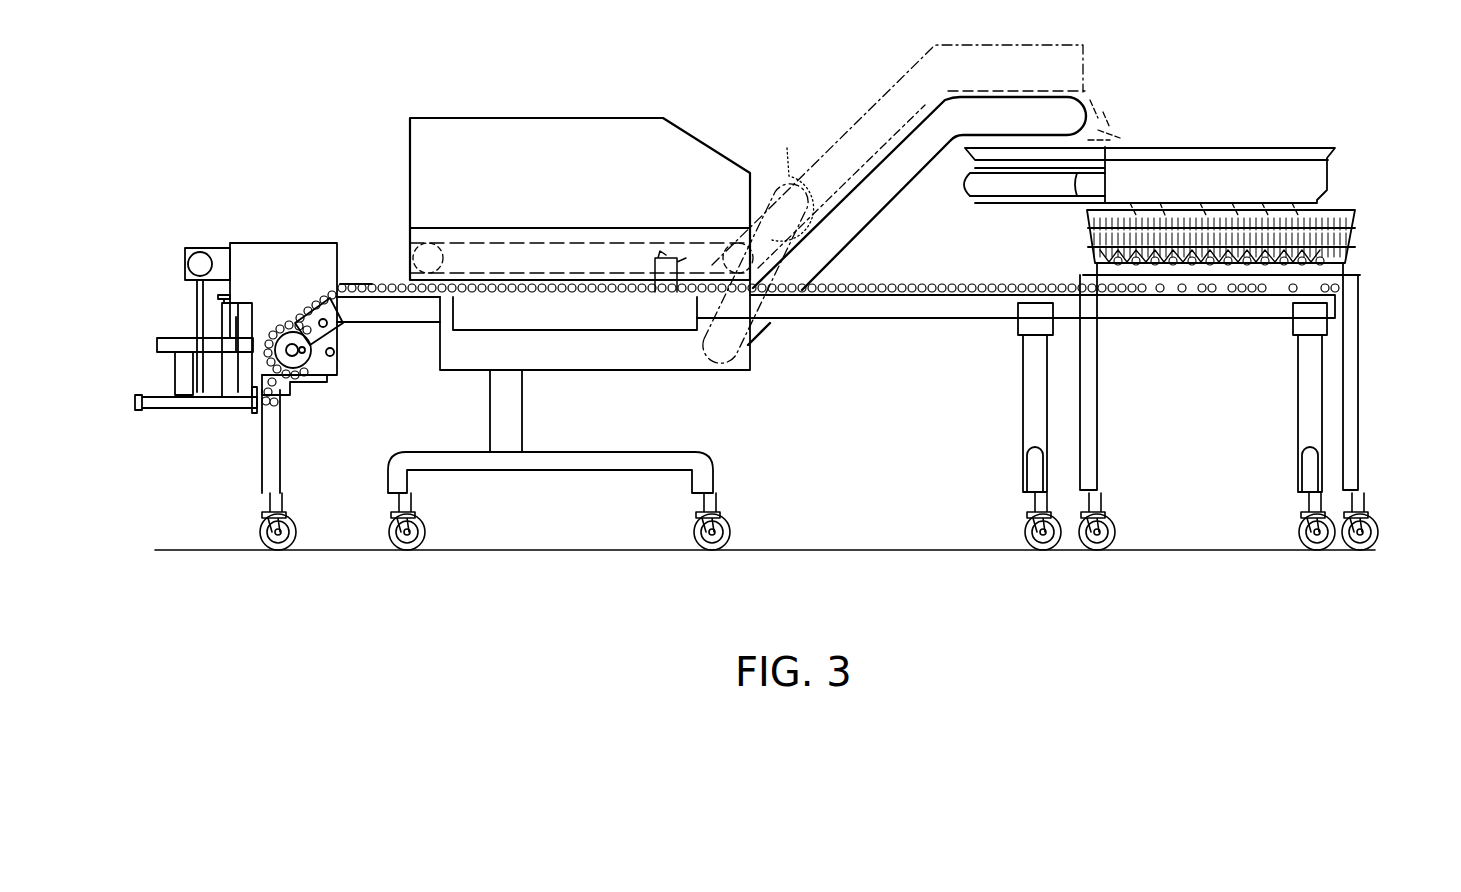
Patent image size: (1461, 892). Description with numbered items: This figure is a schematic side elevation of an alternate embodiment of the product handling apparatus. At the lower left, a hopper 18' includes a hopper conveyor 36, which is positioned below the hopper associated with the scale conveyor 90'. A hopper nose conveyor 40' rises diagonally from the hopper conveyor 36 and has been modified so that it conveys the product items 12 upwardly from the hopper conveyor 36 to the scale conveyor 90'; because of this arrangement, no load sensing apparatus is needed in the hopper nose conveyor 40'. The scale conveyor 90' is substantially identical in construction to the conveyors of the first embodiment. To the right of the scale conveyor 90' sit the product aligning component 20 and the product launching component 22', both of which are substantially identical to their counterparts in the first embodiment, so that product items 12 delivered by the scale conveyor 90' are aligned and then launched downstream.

The hopper 18' is at (580, 160).
The hopper conveyor 36 is at (431, 248).
The product items 12 is at (792, 178).
The hopper nose conveyor 40' is at (911, 204).
The scale conveyor 90' is at (1149, 144).
The product aligning component 20 is at (1356, 218).
The product launching component 22' is at (1280, 284).